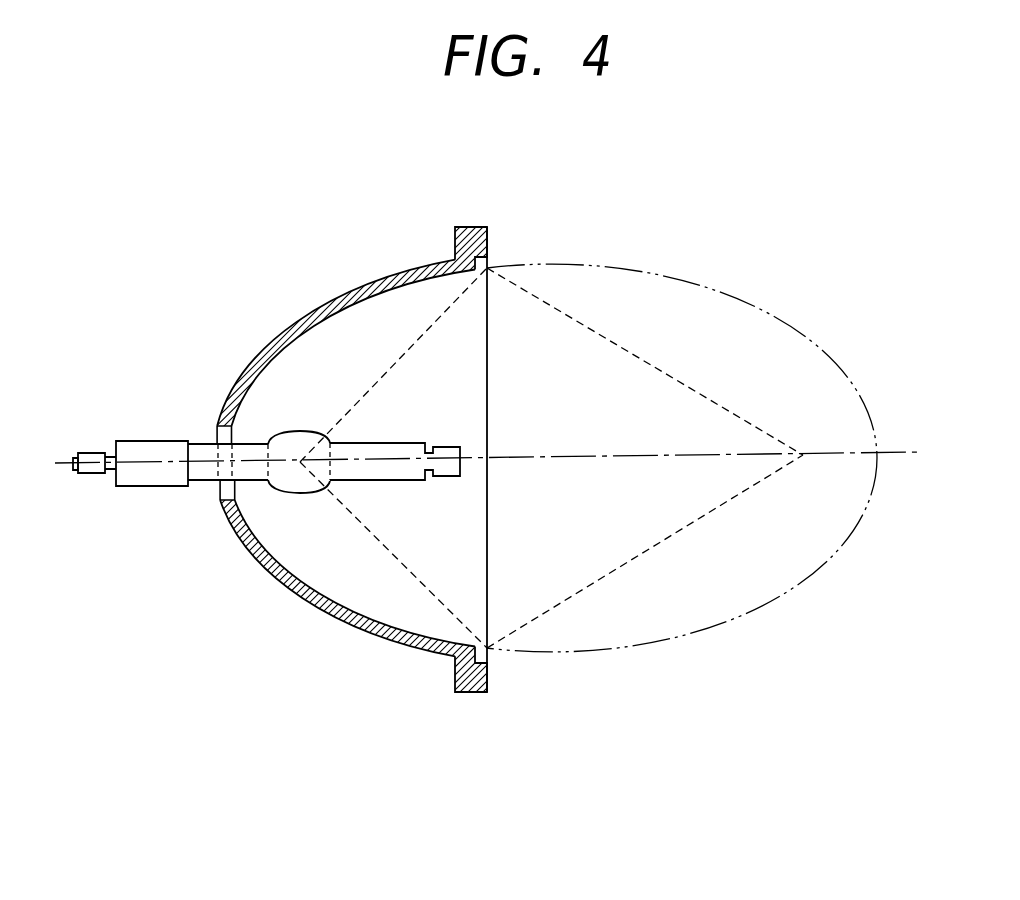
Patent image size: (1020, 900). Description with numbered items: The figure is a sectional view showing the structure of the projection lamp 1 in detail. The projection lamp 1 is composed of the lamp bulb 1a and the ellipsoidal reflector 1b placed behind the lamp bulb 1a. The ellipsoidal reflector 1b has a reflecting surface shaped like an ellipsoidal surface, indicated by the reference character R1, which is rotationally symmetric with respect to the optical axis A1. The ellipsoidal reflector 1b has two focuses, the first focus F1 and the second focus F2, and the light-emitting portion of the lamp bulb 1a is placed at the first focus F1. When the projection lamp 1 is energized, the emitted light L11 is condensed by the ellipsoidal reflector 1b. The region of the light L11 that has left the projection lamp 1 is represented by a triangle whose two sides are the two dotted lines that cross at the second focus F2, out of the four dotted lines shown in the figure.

The projection lamp 1 is at (491, 484).
The lamp bulb 1a is at (300, 497).
The ellipsoidal reflector 1b is at (258, 570).
The first focus F1 is at (301, 458).
The second focus F2 is at (804, 457).
The optical axis A1 is at (898, 452).
The emitted light L11 is at (598, 393).
The ellipsoidal surface R1 is at (655, 643).